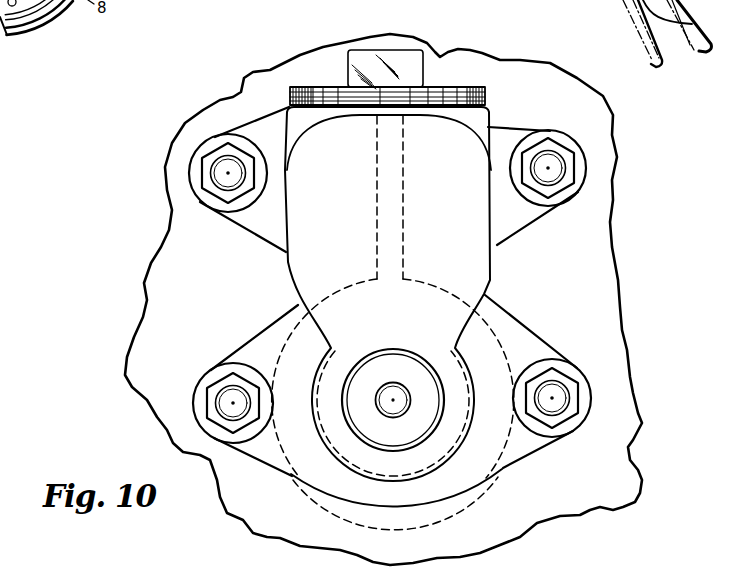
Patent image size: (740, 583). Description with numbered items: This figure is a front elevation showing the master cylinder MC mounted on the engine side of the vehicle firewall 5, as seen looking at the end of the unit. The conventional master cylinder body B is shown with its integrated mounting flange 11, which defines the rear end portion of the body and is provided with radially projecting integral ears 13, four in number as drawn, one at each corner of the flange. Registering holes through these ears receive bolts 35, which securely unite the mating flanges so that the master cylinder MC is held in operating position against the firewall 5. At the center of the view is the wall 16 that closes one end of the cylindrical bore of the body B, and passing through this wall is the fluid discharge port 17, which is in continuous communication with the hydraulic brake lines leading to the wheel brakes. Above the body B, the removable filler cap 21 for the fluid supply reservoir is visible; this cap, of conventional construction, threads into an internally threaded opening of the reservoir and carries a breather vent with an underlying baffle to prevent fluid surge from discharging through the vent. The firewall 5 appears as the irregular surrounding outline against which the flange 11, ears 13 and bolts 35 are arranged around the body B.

The vehicle firewall 5 is at (615, 207).
The master cylinder MC is at (267, 109).
The master cylinder body B is at (288, 272).
The filler cap 21 is at (440, 57).
The ears 13 is at (529, 140).
The bolts 35 is at (547, 162).
The mounting flange 11 is at (247, 216).
The wall 16 is at (363, 414).
The fluid discharge port 17 is at (394, 392).